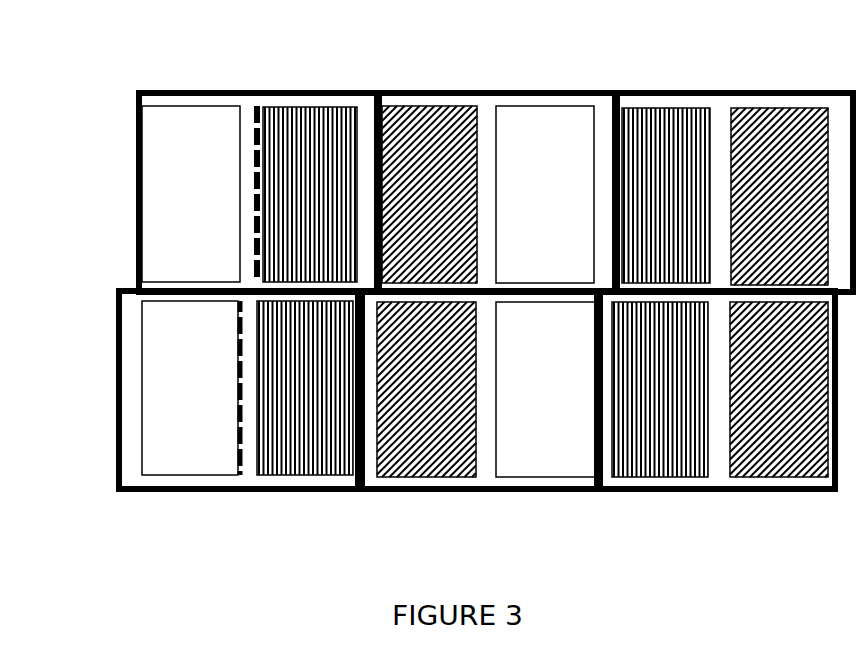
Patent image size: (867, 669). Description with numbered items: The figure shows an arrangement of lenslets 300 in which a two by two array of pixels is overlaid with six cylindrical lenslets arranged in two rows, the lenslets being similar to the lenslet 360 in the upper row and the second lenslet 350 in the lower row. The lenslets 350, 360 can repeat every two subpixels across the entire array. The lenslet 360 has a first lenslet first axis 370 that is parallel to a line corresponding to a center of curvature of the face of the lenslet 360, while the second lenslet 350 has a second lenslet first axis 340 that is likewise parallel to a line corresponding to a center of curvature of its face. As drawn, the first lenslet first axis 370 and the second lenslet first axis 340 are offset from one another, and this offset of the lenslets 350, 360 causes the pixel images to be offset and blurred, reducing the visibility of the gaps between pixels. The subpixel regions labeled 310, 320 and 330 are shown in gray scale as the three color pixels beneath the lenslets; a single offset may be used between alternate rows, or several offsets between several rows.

The arrangement of lenslets 300 is at (88, 535).
The first sub-pixel region (white) 310 is at (192, 468).
The second sub-pixel region (vertical hatch) 320 is at (338, 472).
The third sub-pixel region (diagonal hatch) 330 is at (435, 475).
The second lenslet first axis 340 is at (239, 421).
The second lenslet 350 is at (118, 353).
The lenslet 360 is at (135, 220).
The first lenslet first axis 370 is at (284, 165).